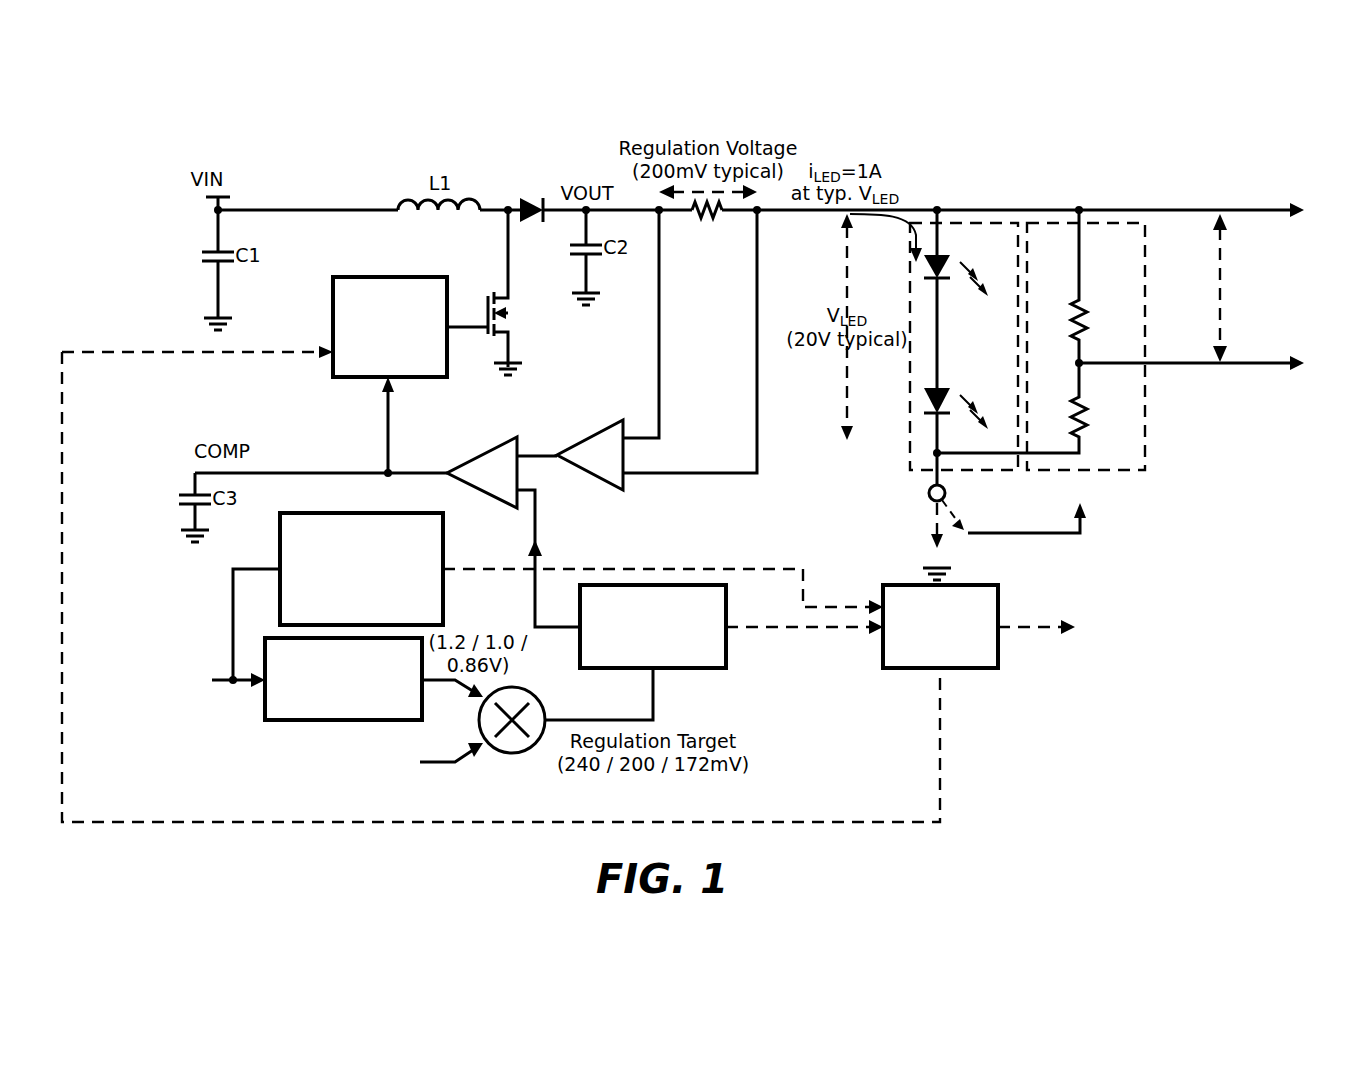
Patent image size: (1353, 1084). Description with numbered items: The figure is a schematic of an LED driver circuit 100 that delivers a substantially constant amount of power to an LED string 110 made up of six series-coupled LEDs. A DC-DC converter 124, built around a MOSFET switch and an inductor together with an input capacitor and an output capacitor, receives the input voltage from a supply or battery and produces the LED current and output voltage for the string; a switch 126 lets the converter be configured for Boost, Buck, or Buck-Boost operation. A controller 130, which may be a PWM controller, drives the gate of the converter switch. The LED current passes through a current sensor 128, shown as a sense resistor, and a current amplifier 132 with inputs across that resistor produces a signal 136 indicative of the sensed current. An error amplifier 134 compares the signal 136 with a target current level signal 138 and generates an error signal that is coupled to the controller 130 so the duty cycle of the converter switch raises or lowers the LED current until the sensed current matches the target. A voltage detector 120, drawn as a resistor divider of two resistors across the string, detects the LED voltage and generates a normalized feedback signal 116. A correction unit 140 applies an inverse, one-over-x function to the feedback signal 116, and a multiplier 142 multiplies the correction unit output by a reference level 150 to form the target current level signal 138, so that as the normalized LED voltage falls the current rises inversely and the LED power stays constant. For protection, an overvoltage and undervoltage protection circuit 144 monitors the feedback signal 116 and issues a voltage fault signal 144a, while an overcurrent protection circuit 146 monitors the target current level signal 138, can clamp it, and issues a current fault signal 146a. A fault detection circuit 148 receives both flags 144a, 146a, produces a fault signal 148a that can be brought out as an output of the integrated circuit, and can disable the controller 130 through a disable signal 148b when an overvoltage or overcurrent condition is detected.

The LED driver circuit 100 is at (1062, 126).
The LED string 110 is at (975, 223).
The feedback signal 116 is at (233, 598).
The voltage detector 120 is at (1118, 223).
The DC-DC converter 124 is at (518, 130).
The switch 126 is at (930, 520).
The current sensor 128 is at (722, 214).
The controller 130 is at (375, 358).
The current amplifier 132 is at (590, 426).
The error amplifier 134 is at (492, 440).
The signal indicative of sensed LED current 136 is at (540, 452).
The target current level signal 138 is at (535, 518).
The correction unit 140 is at (328, 708).
The multiplier 142 is at (415, 475).
The overvoltage and undervoltage protection circuit 144 is at (346, 618).
The voltage fault signal 144a is at (690, 569).
The overcurrent protection circuit 146 is at (638, 666).
The current fault signal 146a is at (750, 630).
The fault detection circuit 148 is at (925, 666).
The fault signal 148a is at (1024, 640).
The disable signal 148b is at (940, 752).
The reference level 150 is at (411, 775).